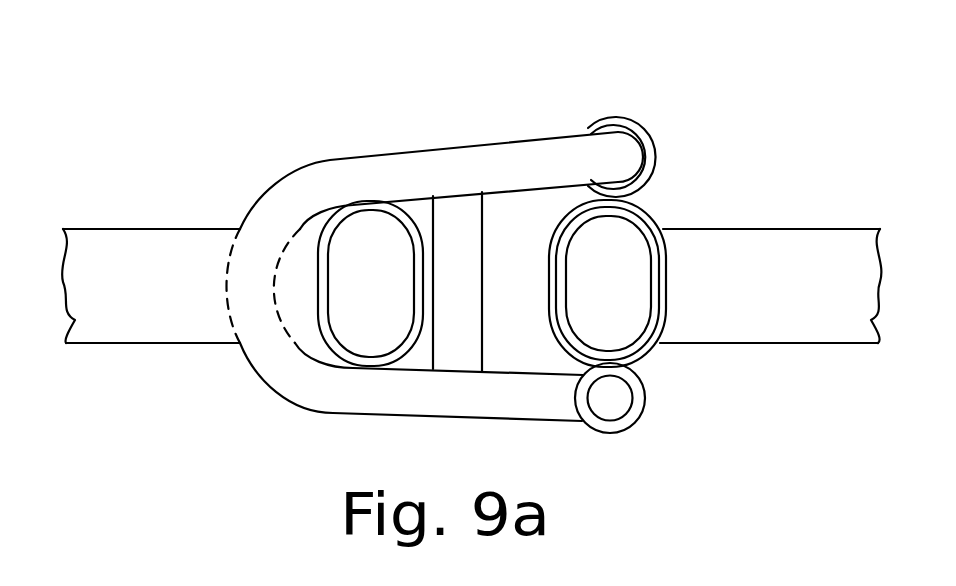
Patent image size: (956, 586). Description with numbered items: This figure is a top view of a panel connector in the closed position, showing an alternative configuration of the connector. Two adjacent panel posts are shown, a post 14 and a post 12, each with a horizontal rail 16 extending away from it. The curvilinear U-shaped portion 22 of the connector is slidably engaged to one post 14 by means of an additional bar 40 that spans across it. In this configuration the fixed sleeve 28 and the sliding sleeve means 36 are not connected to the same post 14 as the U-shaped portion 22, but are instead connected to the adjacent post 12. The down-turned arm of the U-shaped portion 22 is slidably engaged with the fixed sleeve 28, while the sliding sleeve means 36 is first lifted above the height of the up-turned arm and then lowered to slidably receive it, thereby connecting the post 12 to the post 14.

The first vertical post 12 is at (622, 243).
The second vertical post 14 is at (363, 232).
The horizontal rail 16 is at (97, 229).
The U-shaped portion 22 is at (240, 227).
The fixed sleeve 28 is at (627, 122).
The sliding sleeve means 36 is at (657, 360).
The bar 40 is at (478, 236).